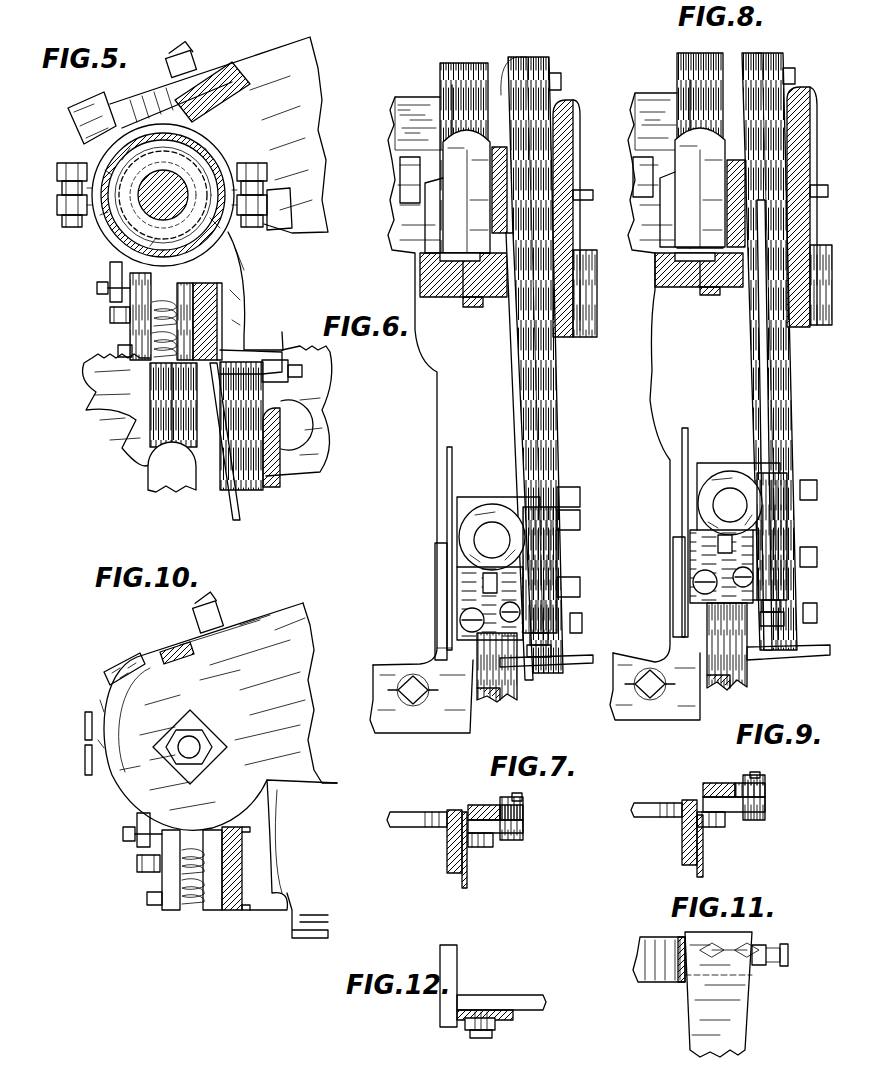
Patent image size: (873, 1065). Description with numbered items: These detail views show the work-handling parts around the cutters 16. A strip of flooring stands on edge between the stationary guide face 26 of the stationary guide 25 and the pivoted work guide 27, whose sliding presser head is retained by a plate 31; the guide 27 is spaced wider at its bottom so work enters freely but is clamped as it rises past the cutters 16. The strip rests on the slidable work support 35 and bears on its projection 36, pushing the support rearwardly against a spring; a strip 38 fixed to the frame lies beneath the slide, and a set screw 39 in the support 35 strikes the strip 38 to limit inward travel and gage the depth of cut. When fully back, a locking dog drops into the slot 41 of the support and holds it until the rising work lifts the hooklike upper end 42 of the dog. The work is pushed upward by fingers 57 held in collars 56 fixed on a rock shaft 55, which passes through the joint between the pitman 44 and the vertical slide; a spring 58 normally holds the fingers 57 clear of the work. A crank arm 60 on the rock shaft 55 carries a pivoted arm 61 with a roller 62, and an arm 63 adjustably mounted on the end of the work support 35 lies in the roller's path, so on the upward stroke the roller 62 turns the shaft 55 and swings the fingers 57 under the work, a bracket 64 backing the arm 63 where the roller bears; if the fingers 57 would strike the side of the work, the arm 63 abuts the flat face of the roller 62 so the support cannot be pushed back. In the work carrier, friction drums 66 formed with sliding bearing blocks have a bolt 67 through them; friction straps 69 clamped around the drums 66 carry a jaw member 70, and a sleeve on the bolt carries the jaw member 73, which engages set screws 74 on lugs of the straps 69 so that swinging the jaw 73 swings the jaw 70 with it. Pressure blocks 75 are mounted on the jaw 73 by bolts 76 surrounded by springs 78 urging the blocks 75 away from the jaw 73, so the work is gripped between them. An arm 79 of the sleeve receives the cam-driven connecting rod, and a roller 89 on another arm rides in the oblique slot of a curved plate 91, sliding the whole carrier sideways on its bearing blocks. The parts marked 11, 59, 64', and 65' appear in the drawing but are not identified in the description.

In FIG. 5, the bolt 11 is at (290, 367).
In FIG. 5, the cutters 16 is at (96, 391).
In FIG. 5, the stationary guide 25 is at (290, 454).
In FIG. 6, the stationary guide 25 is at (565, 117).
In FIG. 8, the stationary guide 25 is at (800, 99).
In FIG. 5, the stationary guide face 26 is at (283, 439).
In FIG. 6, the stationary guide face 26 is at (507, 80).
In FIG. 8, the stationary guide face 26 is at (735, 70).
In FIG. 5, the pivoted work guide 27 is at (152, 367).
In FIG. 6, the pivoted work guide 27 is at (470, 64).
In FIG. 8, the pivoted work guide 27 is at (710, 54).
In FIG. 6, the plate 31 is at (400, 189).
In FIG. 8, the plate 31 is at (633, 189).
In FIG. 6, the work support 35 is at (470, 305).
In FIG. 8, the work support 35 is at (705, 292).
In FIG. 11, the work support 35 is at (660, 957).
In FIG. 12, the work support 35 is at (530, 1004).
In FIG. 12, the projection 36 is at (457, 959).
In FIG. 6, the strip 38 is at (496, 300).
In FIG. 8, the strip 38 is at (733, 290).
In FIG. 11, the set screw 39 is at (783, 957).
In FIG. 6, the slot or recess 41 is at (450, 265).
In FIG. 8, the slot or recess 41 is at (670, 261).
In FIG. 5, the hooklike upper end 42 is at (162, 462).
In FIG. 6, the hooklike upper end 42 is at (460, 149).
In FIG. 8, the hooklike upper end 42 is at (700, 147).
In FIG. 6, the pitman 44 is at (500, 689).
In FIG. 8, the pitman 44 is at (730, 679).
In FIG. 6, the rock shaft 55 is at (495, 530).
In FIG. 8, the rock shaft 55 is at (732, 499).
In FIG. 6, the collars 56 is at (545, 579).
In FIG. 8, the collars 56 is at (778, 557).
In FIG. 5, the fingers 57 is at (236, 504).
In FIG. 6, the fingers 57 is at (532, 385).
In FIG. 8, the fingers 57 is at (762, 384).
In FIG. 6, the spring 58 is at (458, 520).
In FIG. 8, the spring 58 is at (700, 480).
In FIG. 6, the nut 59 is at (552, 647).
In FIG. 8, the nut 59 is at (780, 614).
In FIG. 6, the crank arm 60 is at (470, 591).
In FIG. 8, the crank arm 60 is at (702, 552).
In FIG. 7, the crank arm 60 is at (488, 804).
In FIG. 9, the crank arm 60 is at (716, 789).
In FIG. 6, the arm 61 is at (520, 659).
In FIG. 8, the arm 61 is at (750, 659).
In FIG. 7, the arm 61 is at (474, 804).
In FIG. 9, the arm 61 is at (710, 789).
In FIG. 6, the roller 62 is at (470, 631).
In FIG. 8, the roller 62 is at (700, 594).
In FIG. 7, the roller 62 is at (489, 839).
In FIG. 9, the roller 62 is at (721, 819).
In FIG. 6, the arm 63 is at (447, 463).
In FIG. 8, the arm 63 is at (682, 461).
In FIG. 7, the arm 63 is at (462, 884).
In FIG. 9, the arm 63 is at (697, 871).
In FIG. 11, the arm 63 is at (735, 999).
In FIG. 6, the bracket 64 is at (406, 591).
In FIG. 8, the bracket 64 is at (649, 571).
In FIG. 7, the bracket 64 is at (424, 841).
In FIG. 9, the bracket 64 is at (664, 832).
In FIG. 5, the arm 64' is at (219, 128).
In FIG. 10, the arm 64' is at (220, 693).
In FIG. 10, the nut 65' is at (218, 744).
In FIG. 5, the friction drums 66 is at (195, 150).
In FIG. 5, the bolt 67 is at (180, 183).
In FIG. 5, the friction straps 69 is at (248, 178).
In FIG. 5, the jaw member 70 is at (244, 259).
In FIG. 10, the jaw member 70 is at (268, 804).
In FIG. 5, the jaw member 73 is at (130, 318).
In FIG. 10, the jaw member 73 is at (162, 877).
In FIG. 5, the set screws 74 is at (97, 289).
In FIG. 10, the set screws 74 is at (123, 837).
In FIG. 5, the pressure blocks 75 is at (205, 320).
In FIG. 10, the pressure blocks 75 is at (215, 871).
In FIG. 5, the bolts 76 is at (118, 351).
In FIG. 10, the bolts 76 is at (147, 899).
In FIG. 5, the springs 78 is at (150, 340).
In FIG. 10, the springs 78 is at (205, 892).
In FIG. 5, the arm 79 is at (288, 204).
In FIG. 5, the roller 89 is at (92, 102).
In FIG. 10, the roller 89 is at (129, 651).
In FIG. 5, the curved plate 91 is at (134, 108).
In FIG. 10, the curved plate 91 is at (162, 649).